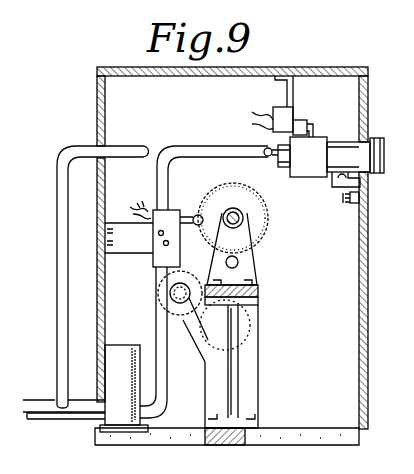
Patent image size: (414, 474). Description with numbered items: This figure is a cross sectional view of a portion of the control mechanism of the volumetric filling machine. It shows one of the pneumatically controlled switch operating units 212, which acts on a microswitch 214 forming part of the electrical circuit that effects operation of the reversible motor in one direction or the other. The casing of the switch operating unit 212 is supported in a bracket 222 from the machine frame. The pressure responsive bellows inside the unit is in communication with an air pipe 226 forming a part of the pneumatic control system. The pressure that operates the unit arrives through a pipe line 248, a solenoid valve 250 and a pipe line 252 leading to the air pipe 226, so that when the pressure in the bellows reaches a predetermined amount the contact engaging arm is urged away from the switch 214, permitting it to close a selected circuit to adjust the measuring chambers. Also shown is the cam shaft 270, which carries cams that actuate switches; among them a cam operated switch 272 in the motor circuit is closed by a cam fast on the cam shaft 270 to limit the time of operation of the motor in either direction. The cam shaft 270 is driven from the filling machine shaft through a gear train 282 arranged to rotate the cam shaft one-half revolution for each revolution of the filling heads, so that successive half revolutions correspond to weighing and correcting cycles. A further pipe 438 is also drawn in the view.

The pneumatically controlled switch operating unit 212 is at (322, 140).
The switch 214 is at (273, 102).
The bracket 222 is at (351, 206).
The air pipe 226 is at (263, 149).
The pipe line 248 is at (38, 415).
The solenoid valve 250 is at (132, 343).
The pipe line 252 is at (163, 373).
The cam shaft 270 is at (242, 215).
The cam operated switch 272 is at (173, 208).
The gear train 282 is at (275, 251).
The pipe 438 is at (58, 344).